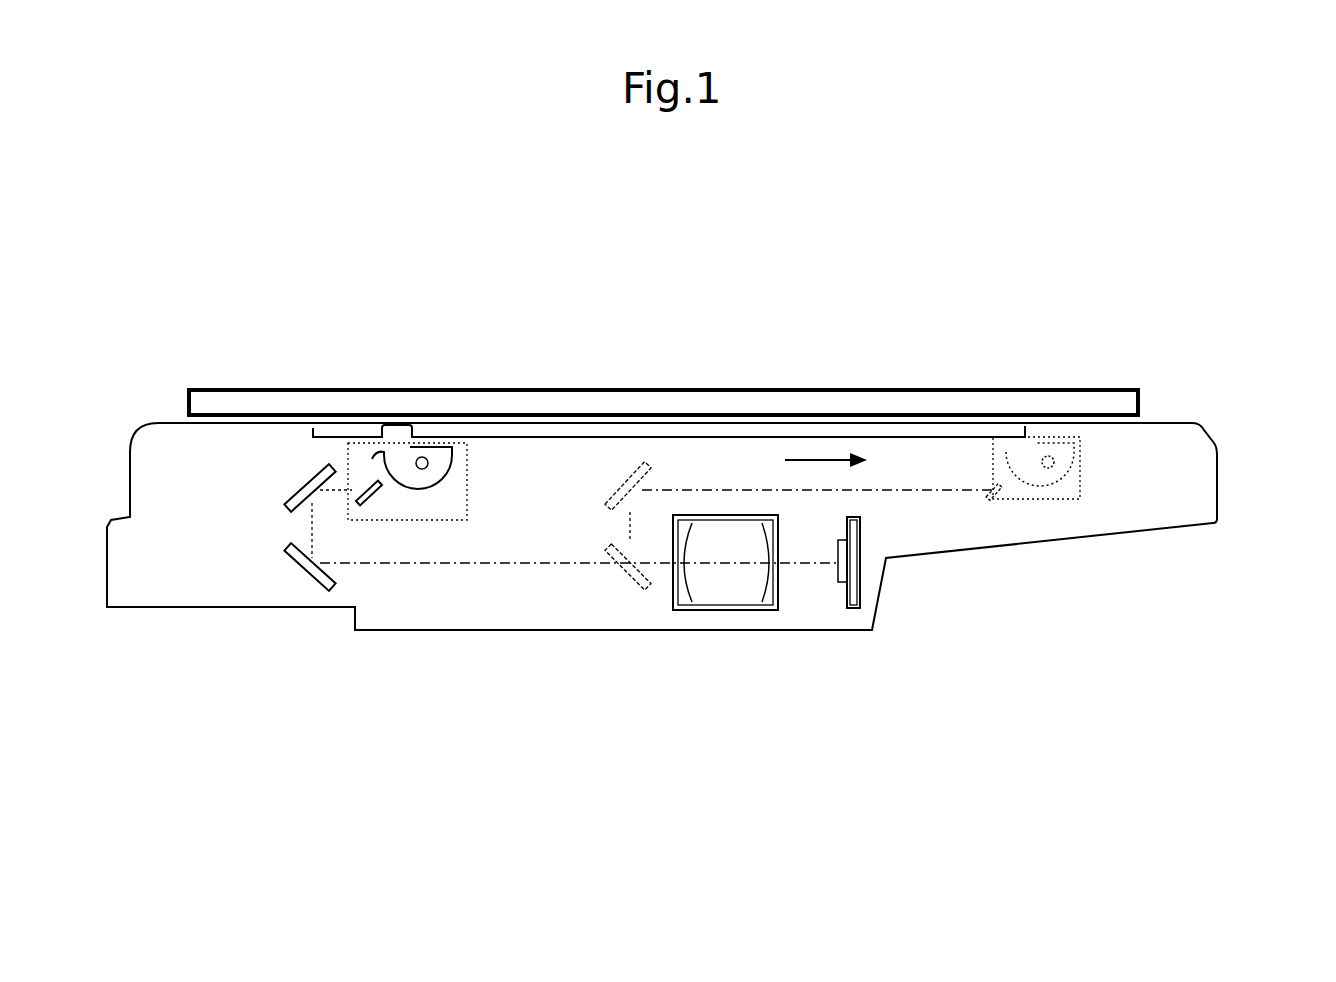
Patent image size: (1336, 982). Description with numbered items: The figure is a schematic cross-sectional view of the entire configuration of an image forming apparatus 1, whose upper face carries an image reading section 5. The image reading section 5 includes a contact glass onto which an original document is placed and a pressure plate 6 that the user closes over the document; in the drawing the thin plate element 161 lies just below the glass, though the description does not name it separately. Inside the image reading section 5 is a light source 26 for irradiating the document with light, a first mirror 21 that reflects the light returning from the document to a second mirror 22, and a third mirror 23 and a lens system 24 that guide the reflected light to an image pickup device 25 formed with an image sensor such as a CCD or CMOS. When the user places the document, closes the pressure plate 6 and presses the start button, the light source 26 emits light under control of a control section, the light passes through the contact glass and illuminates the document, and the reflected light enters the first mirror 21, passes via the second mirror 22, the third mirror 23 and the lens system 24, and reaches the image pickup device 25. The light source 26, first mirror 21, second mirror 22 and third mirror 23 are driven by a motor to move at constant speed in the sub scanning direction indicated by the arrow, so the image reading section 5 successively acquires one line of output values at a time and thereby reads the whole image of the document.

The image forming apparatus 1 is at (1192, 193).
The image reading section 5 is at (1218, 426).
The pressure plate 6 is at (1113, 388).
The guide plate 161 is at (565, 440).
The first mirror 21 is at (383, 497).
The second mirror 22 is at (302, 490).
The third mirror 23 is at (307, 578).
The lens system 24 is at (727, 612).
The image pickup device 25 is at (856, 575).
The light source 26 is at (453, 465).